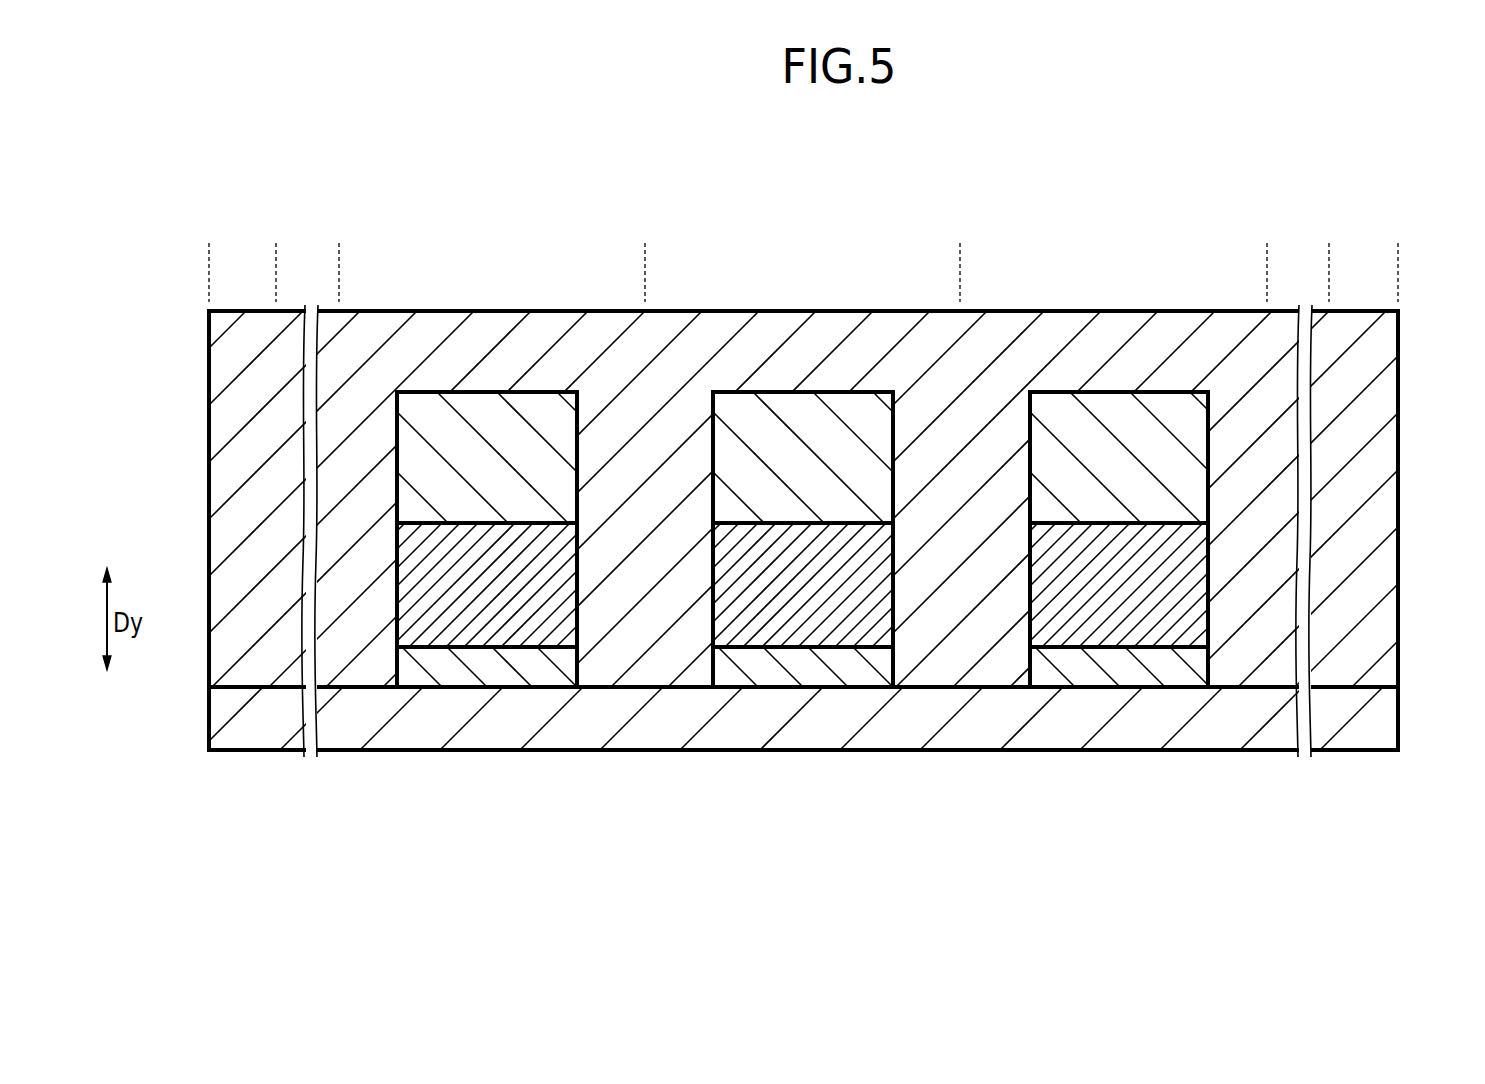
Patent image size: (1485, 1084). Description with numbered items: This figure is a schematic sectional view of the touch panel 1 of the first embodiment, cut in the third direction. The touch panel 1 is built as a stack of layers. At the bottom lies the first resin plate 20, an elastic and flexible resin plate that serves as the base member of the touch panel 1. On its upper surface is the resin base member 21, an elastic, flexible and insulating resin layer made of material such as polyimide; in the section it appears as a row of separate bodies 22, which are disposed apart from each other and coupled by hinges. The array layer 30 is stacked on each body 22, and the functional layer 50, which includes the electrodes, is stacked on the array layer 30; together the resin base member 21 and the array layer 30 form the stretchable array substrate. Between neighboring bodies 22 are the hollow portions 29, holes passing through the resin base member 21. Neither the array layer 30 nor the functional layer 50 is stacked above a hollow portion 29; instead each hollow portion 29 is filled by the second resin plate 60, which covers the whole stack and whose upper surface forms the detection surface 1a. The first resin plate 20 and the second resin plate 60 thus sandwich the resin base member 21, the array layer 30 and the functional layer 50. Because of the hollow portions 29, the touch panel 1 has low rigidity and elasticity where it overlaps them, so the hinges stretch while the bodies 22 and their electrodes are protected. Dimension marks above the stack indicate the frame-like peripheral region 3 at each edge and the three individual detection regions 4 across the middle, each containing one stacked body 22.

The touch panel 1 is at (1384, 171).
The detection surface 1a is at (1281, 310).
The peripheral region 3 is at (1398, 279).
The individual detection region 4 is at (1267, 279).
The first resin plate 20 is at (1379, 725).
The resin base member 21 is at (770, 672).
The body 22 is at (455, 672).
The hollow portion 29 is at (646, 678).
The array layer 30 is at (512, 625).
The functional layer 50 is at (415, 448).
The second resin plate 60 is at (1378, 352).